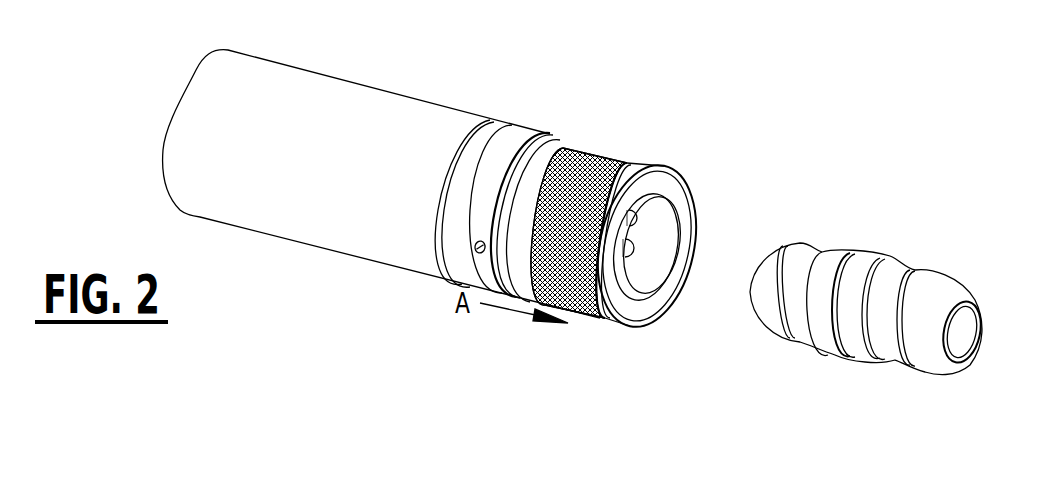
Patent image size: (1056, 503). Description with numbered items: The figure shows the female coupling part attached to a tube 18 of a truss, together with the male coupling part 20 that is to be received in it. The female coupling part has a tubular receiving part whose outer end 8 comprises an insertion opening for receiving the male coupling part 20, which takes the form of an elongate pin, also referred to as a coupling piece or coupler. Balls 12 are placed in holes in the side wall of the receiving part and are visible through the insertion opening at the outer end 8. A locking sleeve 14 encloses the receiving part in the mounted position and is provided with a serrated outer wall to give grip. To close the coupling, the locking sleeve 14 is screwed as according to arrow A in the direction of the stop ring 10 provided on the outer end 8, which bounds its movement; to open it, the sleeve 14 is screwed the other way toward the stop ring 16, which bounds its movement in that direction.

The outer end 8 is at (737, 157).
The stop ring 10 is at (597, 298).
The balls 12 is at (633, 255).
The locking sleeve 14 is at (600, 168).
The stop ring 16 is at (519, 142).
The tube 18 is at (192, 103).
The male coupling part 20 is at (947, 192).